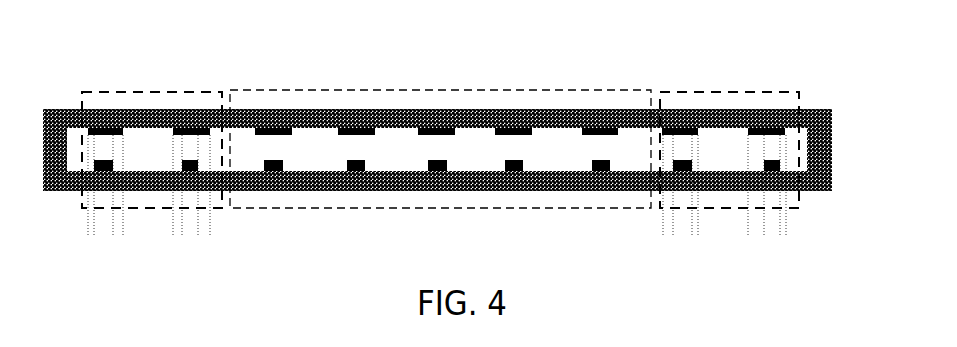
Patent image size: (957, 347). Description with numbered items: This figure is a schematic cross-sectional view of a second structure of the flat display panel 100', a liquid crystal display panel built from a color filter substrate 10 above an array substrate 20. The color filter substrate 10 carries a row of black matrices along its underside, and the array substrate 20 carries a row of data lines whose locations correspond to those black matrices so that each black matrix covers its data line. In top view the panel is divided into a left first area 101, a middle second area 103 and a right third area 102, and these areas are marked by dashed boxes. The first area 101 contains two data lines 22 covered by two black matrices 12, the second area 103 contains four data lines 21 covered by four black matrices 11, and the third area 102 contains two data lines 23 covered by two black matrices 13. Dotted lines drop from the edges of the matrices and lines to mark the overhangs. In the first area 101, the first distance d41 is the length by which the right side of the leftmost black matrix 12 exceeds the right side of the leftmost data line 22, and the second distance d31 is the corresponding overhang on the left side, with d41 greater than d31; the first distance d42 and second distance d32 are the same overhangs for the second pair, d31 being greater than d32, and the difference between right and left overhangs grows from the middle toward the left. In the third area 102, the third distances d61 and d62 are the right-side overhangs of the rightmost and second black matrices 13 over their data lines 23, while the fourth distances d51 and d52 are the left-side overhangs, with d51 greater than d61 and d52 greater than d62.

The display panel 100' is at (454, 136).
The color filter substrate 10 is at (831, 110).
The black matrix 11 is at (523, 109).
The black matrix 12 is at (84, 104).
The black matrix 13 is at (775, 110).
The array substrate 20 is at (832, 175).
The data line 21 is at (503, 190).
The data line 22 is at (92, 190).
The data line 23 is at (673, 190).
The first area 101 is at (155, 92).
The third area 102 is at (717, 92).
The second area 103 is at (332, 90).
The second distance d31 is at (90, 198).
The first distance d41 is at (124, 198).
The second distance d32 is at (170, 198).
The first distance d42 is at (212, 198).
The fourth distance d52 is at (673, 200).
The third distance d62 is at (706, 200).
The fourth distance d51 is at (753, 200).
The third distance d61 is at (794, 200).